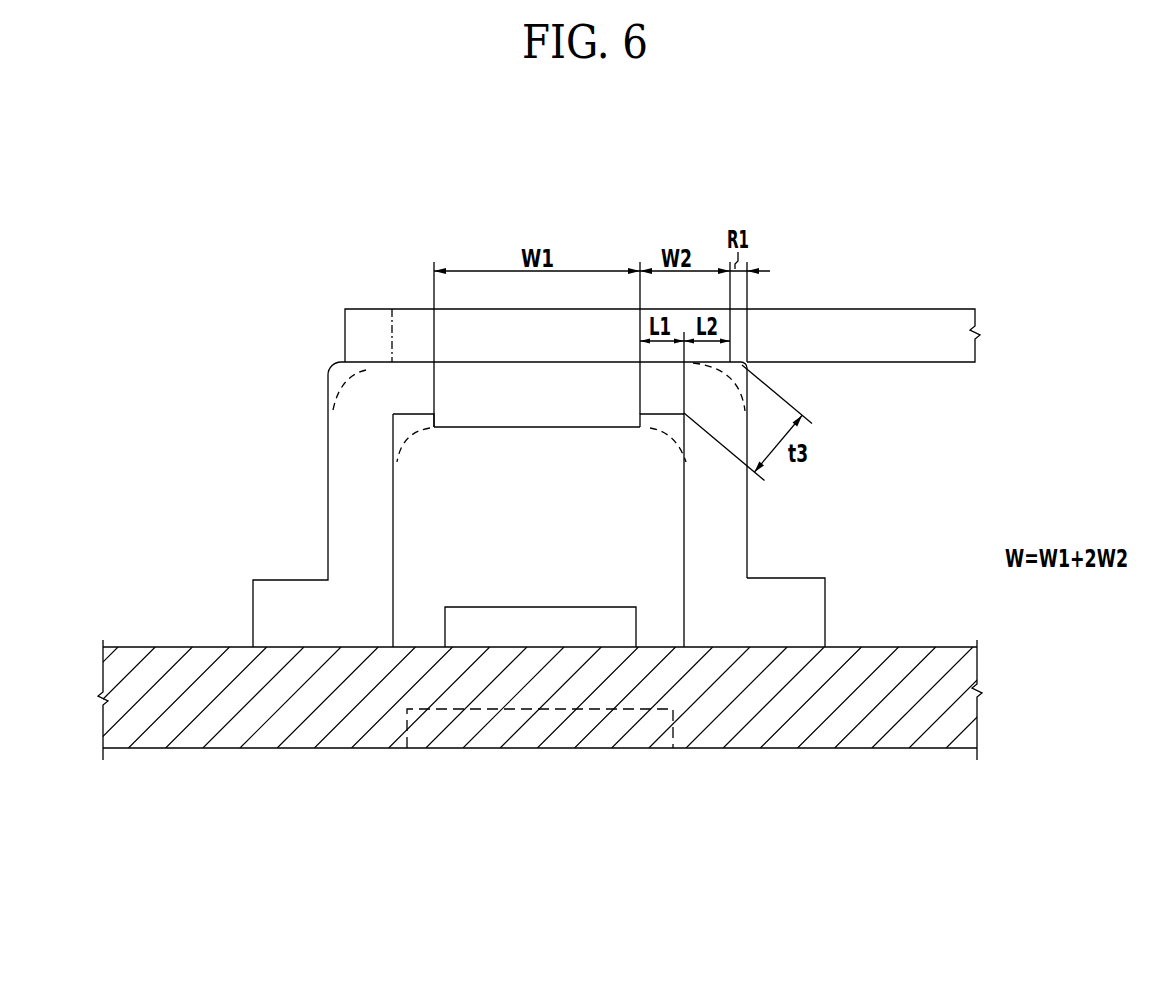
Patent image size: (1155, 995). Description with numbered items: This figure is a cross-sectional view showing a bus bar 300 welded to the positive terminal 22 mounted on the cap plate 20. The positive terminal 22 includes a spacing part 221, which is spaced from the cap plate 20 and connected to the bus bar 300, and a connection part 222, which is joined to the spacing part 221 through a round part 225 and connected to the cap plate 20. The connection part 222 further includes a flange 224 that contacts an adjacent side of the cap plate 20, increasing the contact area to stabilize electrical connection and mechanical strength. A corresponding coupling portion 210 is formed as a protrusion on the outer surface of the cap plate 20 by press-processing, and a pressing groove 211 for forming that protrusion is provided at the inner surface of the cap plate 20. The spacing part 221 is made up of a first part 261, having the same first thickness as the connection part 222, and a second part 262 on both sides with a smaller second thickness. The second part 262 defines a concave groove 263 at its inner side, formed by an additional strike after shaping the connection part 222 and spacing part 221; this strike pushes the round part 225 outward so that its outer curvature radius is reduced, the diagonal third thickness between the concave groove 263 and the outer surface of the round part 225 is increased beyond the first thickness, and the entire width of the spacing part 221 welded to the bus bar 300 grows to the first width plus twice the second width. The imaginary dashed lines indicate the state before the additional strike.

The cap plate 20 is at (920, 673).
The positive terminal 22 is at (582, 197).
The corresponding coupling portion 210 is at (490, 620).
The pressing groove 211 is at (572, 733).
The spacing part 221 is at (413, 350).
The connection part 222 is at (730, 535).
The flange 224 is at (800, 604).
The round part 225 is at (752, 361).
The first part 261 is at (497, 393).
The second part 262 is at (407, 387).
The concave groove 263 is at (396, 425).
The bus bar 300 is at (906, 322).